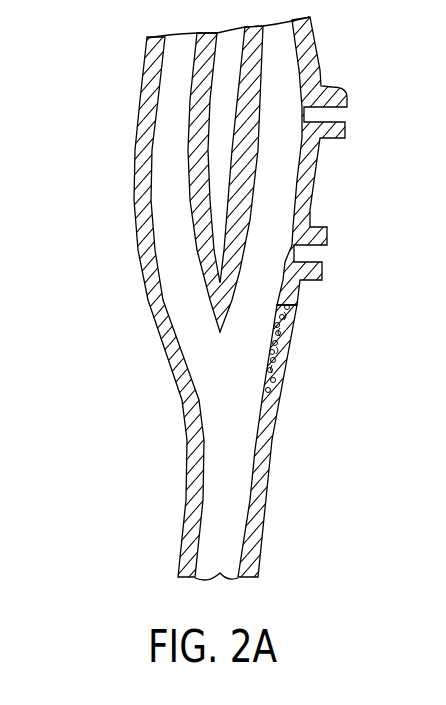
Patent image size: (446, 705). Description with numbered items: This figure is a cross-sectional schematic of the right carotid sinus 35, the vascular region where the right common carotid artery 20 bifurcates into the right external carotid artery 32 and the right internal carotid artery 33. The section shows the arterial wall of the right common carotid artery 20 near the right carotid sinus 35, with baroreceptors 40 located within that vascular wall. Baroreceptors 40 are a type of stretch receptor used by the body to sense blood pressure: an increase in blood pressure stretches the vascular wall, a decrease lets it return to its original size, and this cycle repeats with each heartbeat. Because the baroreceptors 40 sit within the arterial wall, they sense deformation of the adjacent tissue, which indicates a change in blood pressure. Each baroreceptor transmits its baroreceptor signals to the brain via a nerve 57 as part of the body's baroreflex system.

The right common carotid artery 20 is at (258, 528).
The right external carotid artery 32 is at (145, 103).
The right internal carotid artery 33 is at (313, 47).
The right carotid sinus 35 is at (136, 399).
The baroreceptors 40 is at (335, 341).
The nerve 57 is at (287, 353).